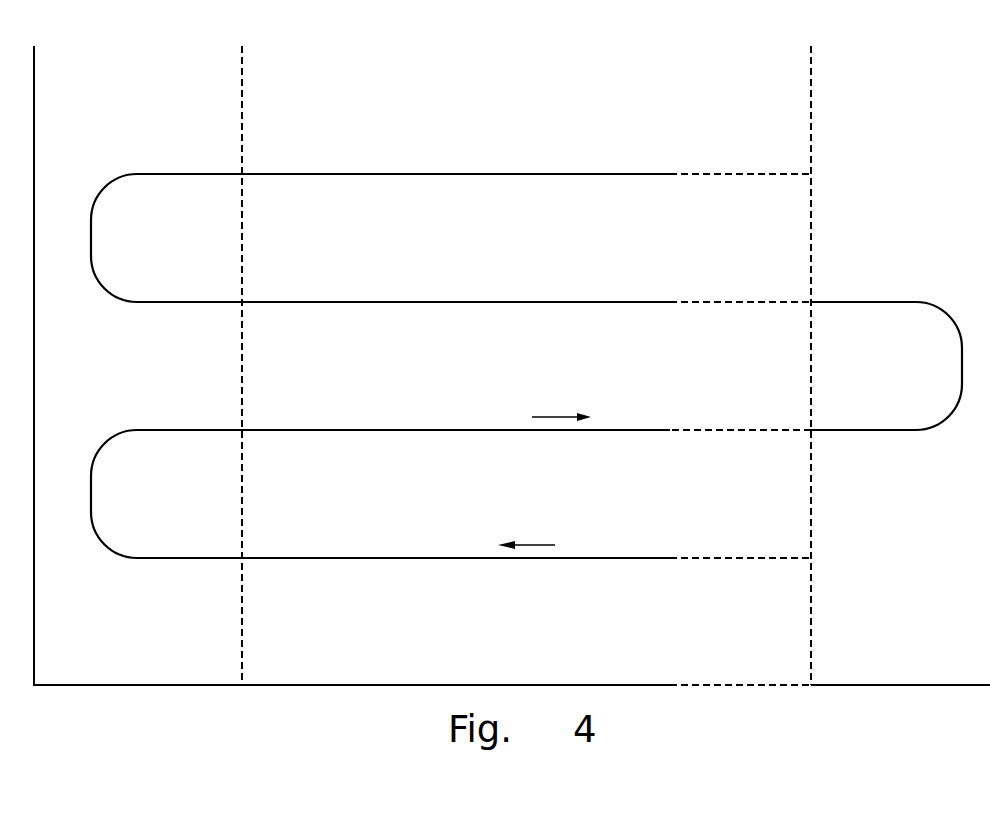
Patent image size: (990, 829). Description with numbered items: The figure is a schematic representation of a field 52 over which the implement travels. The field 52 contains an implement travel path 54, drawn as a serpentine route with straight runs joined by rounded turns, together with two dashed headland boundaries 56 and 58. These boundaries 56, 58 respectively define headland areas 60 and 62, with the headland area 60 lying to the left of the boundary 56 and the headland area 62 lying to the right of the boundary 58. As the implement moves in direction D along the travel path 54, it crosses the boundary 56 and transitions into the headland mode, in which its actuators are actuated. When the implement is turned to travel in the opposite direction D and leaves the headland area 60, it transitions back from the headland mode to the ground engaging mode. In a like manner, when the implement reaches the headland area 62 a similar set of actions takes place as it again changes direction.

The field 52 is at (487, 373).
The implement travel path 54 is at (398, 301).
The headland boundary 56 is at (242, 365).
The headland boundary 58 is at (811, 357).
The headland area 60 is at (168, 385).
The headland area 62 is at (930, 533).
The direction D is at (558, 417).